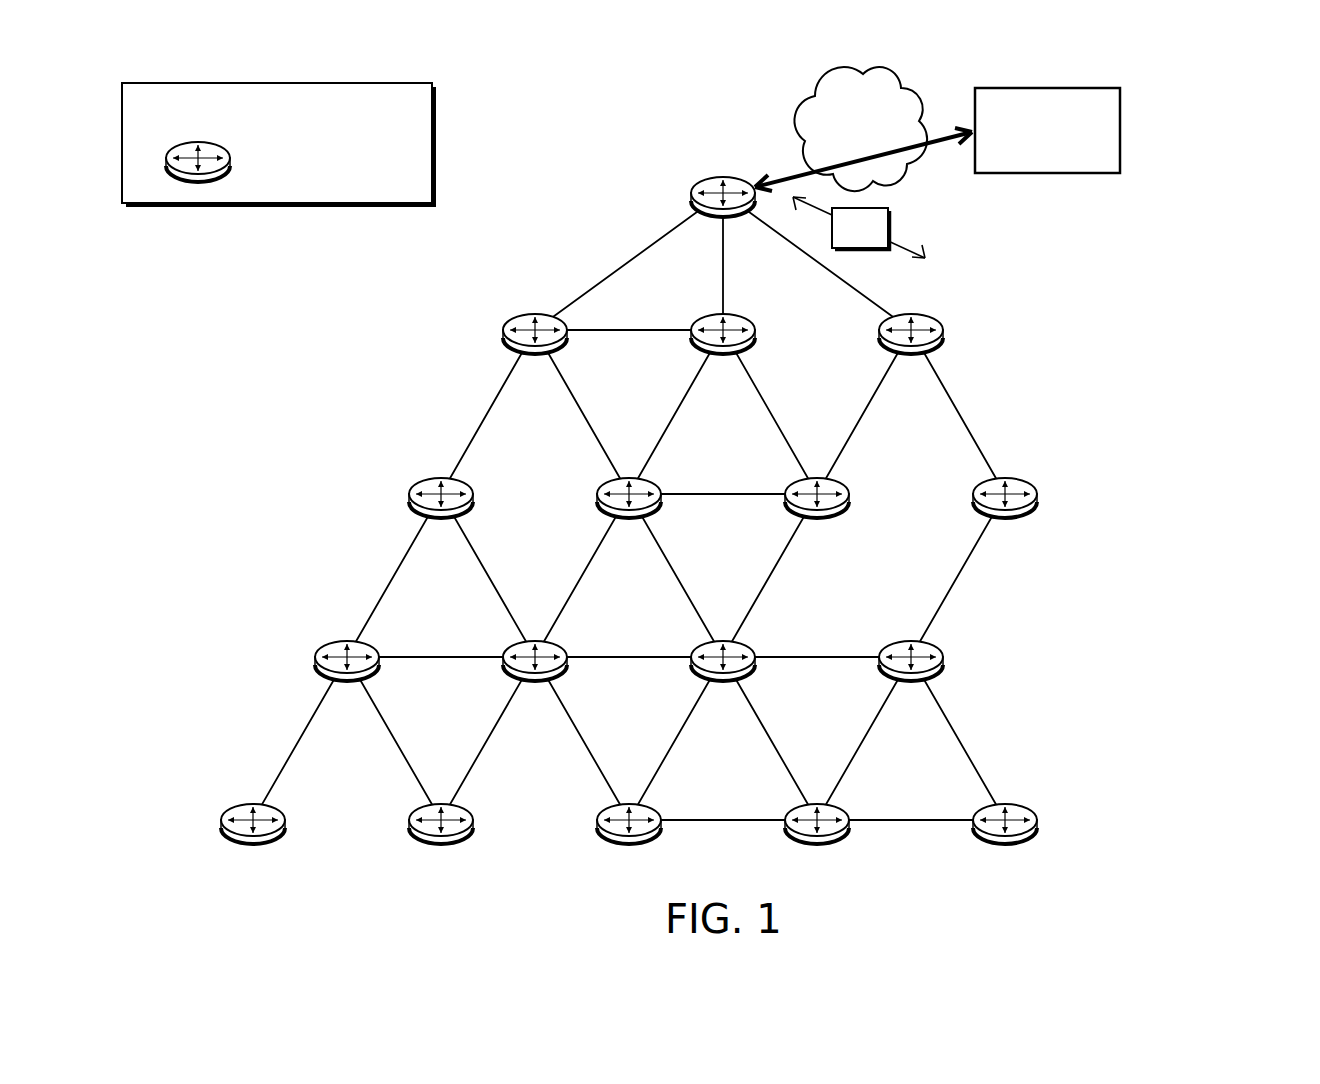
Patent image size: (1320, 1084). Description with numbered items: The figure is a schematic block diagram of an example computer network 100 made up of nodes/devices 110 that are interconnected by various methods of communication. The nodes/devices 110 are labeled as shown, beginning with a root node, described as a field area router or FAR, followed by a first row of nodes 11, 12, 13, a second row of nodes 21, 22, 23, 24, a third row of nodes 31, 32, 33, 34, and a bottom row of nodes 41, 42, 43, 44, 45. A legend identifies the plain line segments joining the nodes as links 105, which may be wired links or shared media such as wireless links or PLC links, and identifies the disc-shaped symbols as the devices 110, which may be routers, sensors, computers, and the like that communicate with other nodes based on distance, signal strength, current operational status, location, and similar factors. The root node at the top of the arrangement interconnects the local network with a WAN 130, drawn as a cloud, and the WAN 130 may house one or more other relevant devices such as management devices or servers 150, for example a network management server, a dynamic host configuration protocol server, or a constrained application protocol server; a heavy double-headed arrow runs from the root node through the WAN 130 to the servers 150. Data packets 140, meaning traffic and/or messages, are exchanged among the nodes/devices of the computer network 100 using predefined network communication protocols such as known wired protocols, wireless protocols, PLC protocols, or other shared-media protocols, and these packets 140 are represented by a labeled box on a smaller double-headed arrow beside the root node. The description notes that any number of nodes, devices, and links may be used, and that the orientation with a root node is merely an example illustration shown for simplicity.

The computer network 100 is at (1220, 146).
The links 105 is at (155, 113).
The nodes/devices 110 is at (601, 498).
The WAN 130 is at (847, 147).
The data packets 140 is at (844, 241).
The servers 150 is at (1031, 155).
The node 11 is at (535, 354).
The node 12 is at (723, 354).
The node 13 is at (911, 354).
The node 21 is at (441, 518).
The node 22 is at (629, 518).
The node 23 is at (817, 518).
The node 24 is at (1005, 518).
The node 31 is at (347, 681).
The node 32 is at (535, 681).
The node 33 is at (723, 681).
The node 34 is at (911, 681).
The node 41 is at (253, 844).
The node 42 is at (441, 844).
The node 43 is at (629, 844).
The node 44 is at (817, 844).
The node 45 is at (1005, 844).